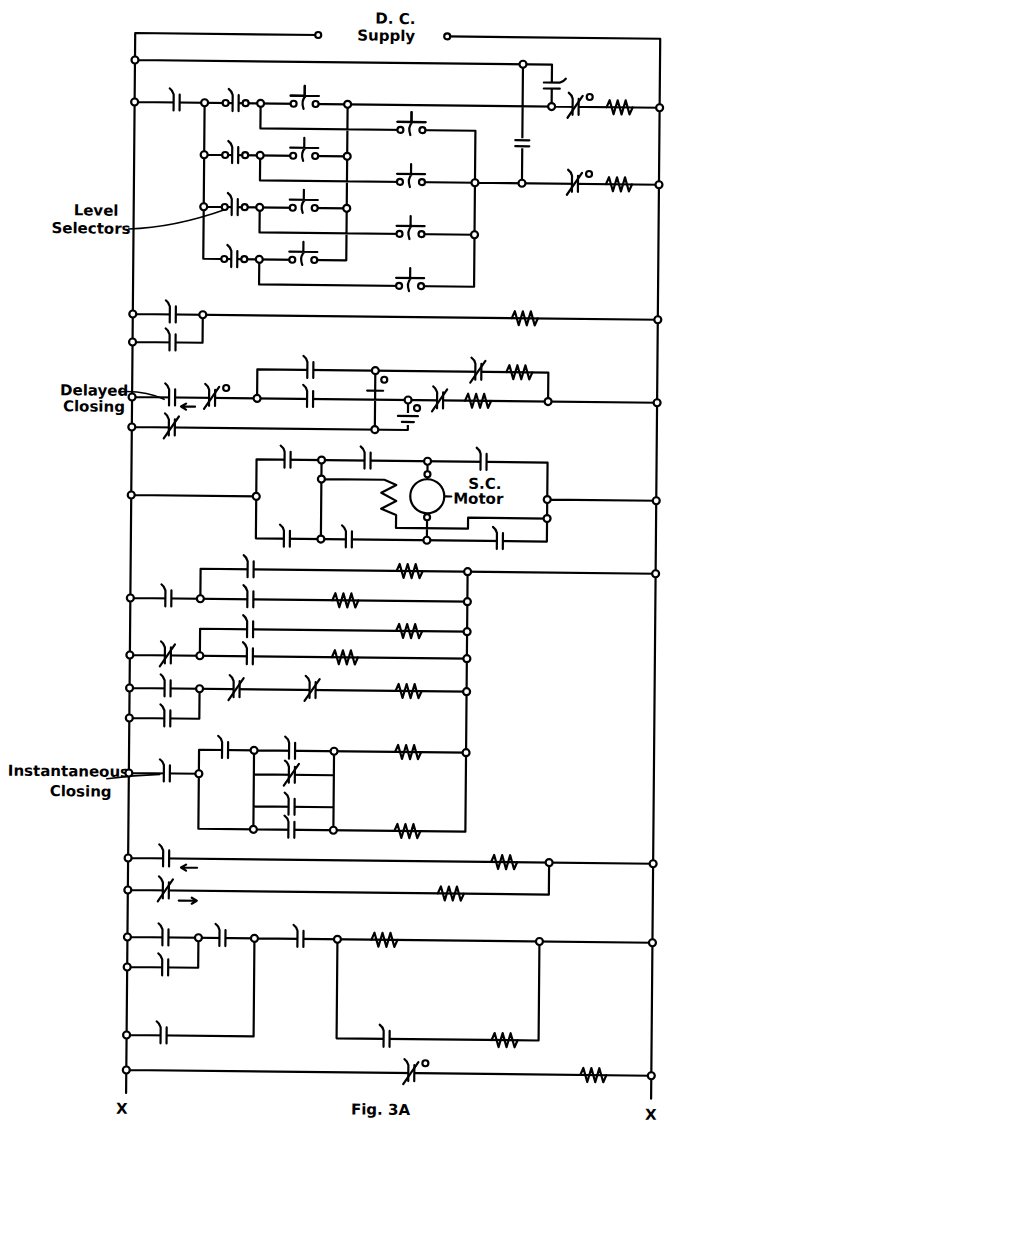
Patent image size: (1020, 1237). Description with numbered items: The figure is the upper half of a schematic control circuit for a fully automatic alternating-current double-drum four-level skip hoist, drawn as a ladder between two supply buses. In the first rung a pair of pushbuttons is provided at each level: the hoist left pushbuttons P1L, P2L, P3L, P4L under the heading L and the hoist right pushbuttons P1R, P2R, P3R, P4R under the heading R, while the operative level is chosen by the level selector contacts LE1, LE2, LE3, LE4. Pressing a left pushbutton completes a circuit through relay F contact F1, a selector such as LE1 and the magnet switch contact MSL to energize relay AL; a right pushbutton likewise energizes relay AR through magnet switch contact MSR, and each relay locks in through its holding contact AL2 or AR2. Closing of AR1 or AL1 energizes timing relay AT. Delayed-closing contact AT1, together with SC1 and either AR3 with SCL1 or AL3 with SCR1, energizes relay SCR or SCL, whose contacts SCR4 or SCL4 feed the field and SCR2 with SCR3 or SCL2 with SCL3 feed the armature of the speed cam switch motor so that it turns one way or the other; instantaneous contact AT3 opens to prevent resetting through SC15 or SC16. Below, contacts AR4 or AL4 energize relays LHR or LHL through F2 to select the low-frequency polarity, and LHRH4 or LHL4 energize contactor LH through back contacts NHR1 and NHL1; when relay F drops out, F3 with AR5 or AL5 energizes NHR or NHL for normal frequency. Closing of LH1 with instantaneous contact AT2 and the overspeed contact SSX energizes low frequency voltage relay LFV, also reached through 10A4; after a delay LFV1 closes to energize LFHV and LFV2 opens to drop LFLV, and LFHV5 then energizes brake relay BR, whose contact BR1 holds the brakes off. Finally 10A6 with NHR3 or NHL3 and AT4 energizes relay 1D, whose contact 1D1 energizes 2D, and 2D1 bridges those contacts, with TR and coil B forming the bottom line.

The relay F contact F1 is at (181, 90).
The hoist left pushbutton group L is at (305, 82).
The hoist right pushbutton group R is at (411, 104).
The level selector switch contact LE1 is at (232, 111).
The level selector switch contact LE2 is at (232, 163).
The level selector switch contact LE3 is at (231, 215).
The level selector switch contact LE4 is at (231, 267).
The hoist left pushbutton P1L is at (295, 108).
The hoist left pushbutton P2L is at (295, 160).
The hoist left pushbutton P3L is at (295, 212).
The hoist left pushbutton P4L is at (294, 264).
The hoist right pushbutton P1R is at (424, 136).
The hoist right pushbutton P2R is at (424, 188).
The hoist right pushbutton P3R is at (423, 240).
The hoist right pushbutton P4R is at (423, 292).
The relay AL holding contact AL2 is at (574, 73).
The relay AL is at (628, 96).
The magnet switch contact MSL is at (593, 117).
The relay AR holding contact AR2 is at (531, 141).
The relay AR is at (630, 173).
The magnet switch contact MSR is at (594, 193).
The relay AR contact AR1 is at (165, 302).
The timing relay AT is at (536, 309).
The relay AL contact AL1 is at (163, 350).
The time-delay contact of relay AT AT1 is at (162, 387).
The speed cam switch contact SC1 is at (227, 384).
The relay AR contact AR3 is at (323, 360).
The speed cam switch reset contact SC15 is at (355, 386).
The relay SCR contact SCR1 is at (423, 394).
The relay SCL contact SCL1 is at (456, 363).
The relay SCR is at (534, 361).
The relay AL contact AL3 is at (289, 403).
The speed cam switch reset contact SC16 is at (416, 427).
The relay SCL is at (495, 411).
The instantaneous contact of relay AT AT3 is at (172, 443).
The relay SCR contact SCR4 is at (258, 454).
The relay SCR contact SCR2 is at (389, 454).
The relay SCL contact SCL2 is at (506, 455).
The relay SCL contact SCL4 is at (288, 526).
The relay SCL contact SCL3 is at (354, 527).
The relay SCR contact SCR3 is at (525, 545).
The relay LHR is at (432, 561).
The relay AR contact AR4 is at (227, 560).
The relay F contact F2 is at (165, 587).
The relay AL contact AL4 is at (267, 593).
The relay LHL is at (363, 593).
The relay NHL is at (429, 624).
The relay AR contact AR5 is at (267, 622).
The relay F contact F3 is at (165, 646).
The relay AL contact AL5 is at (267, 650).
The relay NHR is at (366, 650).
The relay LHR contact LHRH4 is at (197, 682).
The relay NHR back contact NHR1 is at (262, 684).
The relay NHL back contact NHL1 is at (337, 685).
The contactor LH is at (420, 684).
The relay LHL contact LHL4 is at (168, 726).
The contactor LH contact LH1 is at (228, 736).
The rotor contactor 10A contact 10A4 is at (306, 737).
The low frequency voltage relay LFV is at (416, 738).
The instantaneous contact of relay AT AT2 is at (165, 782).
The relay BR contact BR1 is at (271, 797).
The speed sensitive switch contact SSX is at (311, 781).
The brake relay BR is at (418, 820).
The relay LFHV contact LFHV5 is at (321, 837).
The relay LFV delayed contact LFV1 is at (164, 848).
The low frequency high voltage relay LFHV is at (526, 852).
The relay LFV delayed contact LFV2 is at (191, 886).
The low frequency low voltage relay LFLV is at (473, 886).
The relay NHR contact NHR3 is at (185, 927).
The rotor contactor 10A contact 10A6 is at (243, 928).
The relay AT contact AT4 is at (310, 928).
The relay 1D is at (393, 928).
The relay NHL contact NHL3 is at (190, 972).
The relay 2D contact 2D1 is at (181, 1026).
The relay 1D contact 1D1 is at (375, 1028).
The relay 2D is at (495, 1031).
The TR contact TR is at (403, 1069).
The relay B coil B is at (594, 1064).